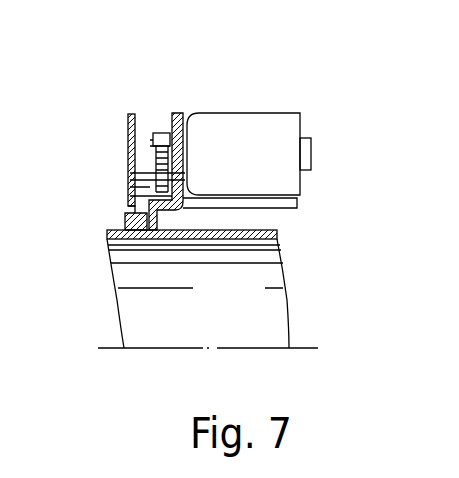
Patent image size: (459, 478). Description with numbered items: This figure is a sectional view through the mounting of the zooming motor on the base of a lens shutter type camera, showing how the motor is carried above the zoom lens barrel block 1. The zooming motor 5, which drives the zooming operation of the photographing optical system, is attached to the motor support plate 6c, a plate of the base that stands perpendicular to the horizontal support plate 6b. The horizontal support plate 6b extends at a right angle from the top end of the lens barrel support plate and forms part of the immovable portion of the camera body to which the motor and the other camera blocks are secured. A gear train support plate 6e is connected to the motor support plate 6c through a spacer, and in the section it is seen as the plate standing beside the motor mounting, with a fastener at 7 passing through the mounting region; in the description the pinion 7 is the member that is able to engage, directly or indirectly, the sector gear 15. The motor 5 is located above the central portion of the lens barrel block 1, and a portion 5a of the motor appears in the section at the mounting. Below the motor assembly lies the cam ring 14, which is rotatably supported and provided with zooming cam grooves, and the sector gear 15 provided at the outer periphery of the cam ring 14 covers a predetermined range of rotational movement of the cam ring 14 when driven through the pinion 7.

The zoom lens barrel block 1 is at (142, 362).
The zooming motor 5 is at (257, 125).
The motor mounting portion 5a is at (153, 133).
The horizontal support plate 6b is at (296, 208).
The motor support plate 6c is at (178, 112).
The gear train support plate 6e is at (128, 120).
The pinion 7 is at (160, 132).
The cam ring 14 is at (228, 245).
The sector gear 15 is at (127, 218).